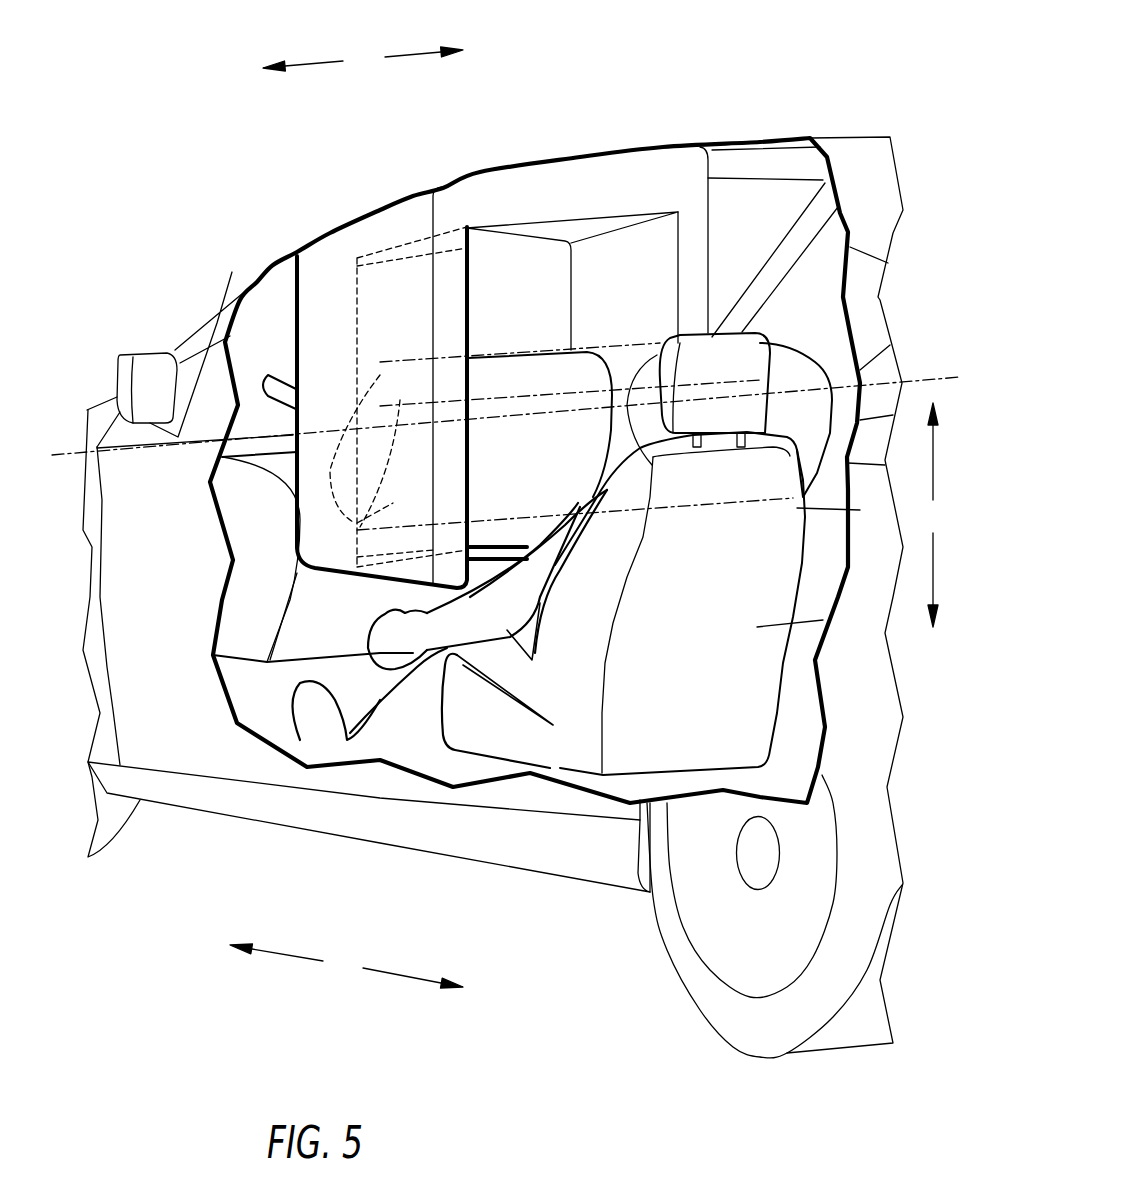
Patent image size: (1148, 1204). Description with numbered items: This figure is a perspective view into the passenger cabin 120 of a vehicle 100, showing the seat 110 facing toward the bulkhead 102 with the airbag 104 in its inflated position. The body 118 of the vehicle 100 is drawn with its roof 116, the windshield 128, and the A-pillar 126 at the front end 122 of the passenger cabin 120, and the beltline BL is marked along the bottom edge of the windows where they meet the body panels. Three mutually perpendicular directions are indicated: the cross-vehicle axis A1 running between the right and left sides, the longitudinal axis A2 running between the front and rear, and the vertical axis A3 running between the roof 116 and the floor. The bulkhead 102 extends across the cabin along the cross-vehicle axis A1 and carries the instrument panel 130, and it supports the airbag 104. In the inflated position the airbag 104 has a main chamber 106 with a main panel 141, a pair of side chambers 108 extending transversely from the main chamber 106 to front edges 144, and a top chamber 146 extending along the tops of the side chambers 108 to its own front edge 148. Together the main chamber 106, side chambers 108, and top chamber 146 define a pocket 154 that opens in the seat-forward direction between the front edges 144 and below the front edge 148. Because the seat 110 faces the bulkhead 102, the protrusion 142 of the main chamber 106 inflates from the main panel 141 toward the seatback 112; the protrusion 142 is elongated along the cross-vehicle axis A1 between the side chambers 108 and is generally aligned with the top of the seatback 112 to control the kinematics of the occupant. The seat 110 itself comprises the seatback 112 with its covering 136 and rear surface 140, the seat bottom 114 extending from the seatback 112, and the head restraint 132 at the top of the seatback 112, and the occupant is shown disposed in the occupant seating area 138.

The vehicle 100 is at (249, 160).
The bulkhead 102 is at (273, 473).
The airbag 104 is at (760, 192).
The main chamber 106 is at (477, 273).
The side chambers 108 is at (393, 297).
The seat 110 is at (714, 676).
The seatback 112 is at (760, 627).
The seat bottom 114 is at (483, 723).
The roof 116 is at (718, 155).
The body 118 is at (153, 653).
The passenger cabin 120 is at (739, 161).
The front end 122 is at (267, 710).
The A-pillar 126 is at (213, 400).
The windshield 128 is at (787, 203).
The instrument panel 130 is at (277, 367).
The head restraint 132 is at (780, 343).
The covering 136 is at (572, 687).
The occupant seating area 138 is at (528, 524).
The rear surface 140 is at (733, 578).
The main panel 141 is at (487, 303).
The protrusion 142 is at (523, 370).
The front edges 144 is at (450, 277).
The top chamber 146 is at (557, 227).
The front edge 148 is at (547, 183).
The pocket 154 is at (644, 290).
The beltline BL is at (78, 452).
The cross-vehicle axis A1 is at (363, 58).
The longitudinal axis A2 is at (346, 966).
The vertical axis A3 is at (934, 515).